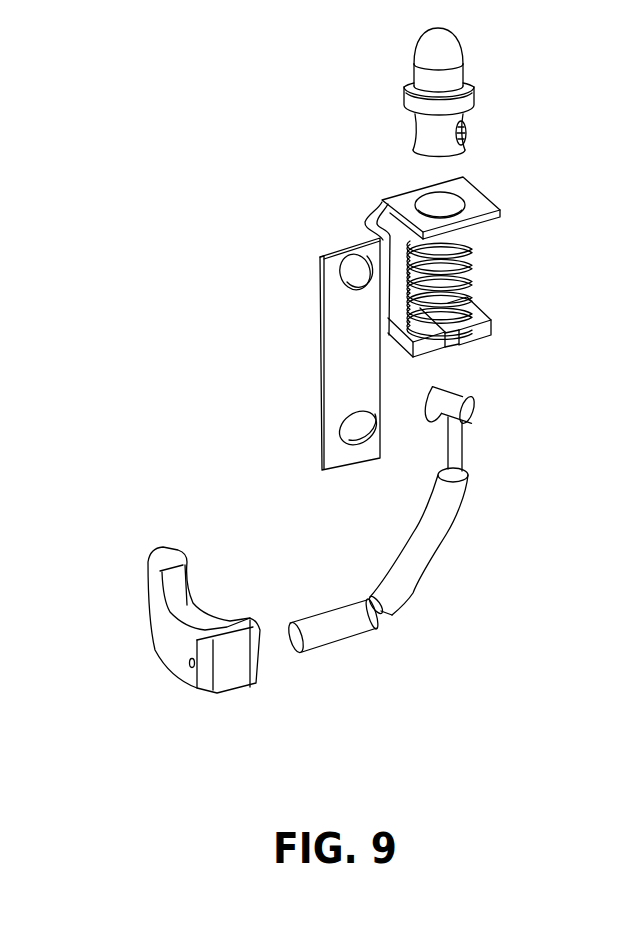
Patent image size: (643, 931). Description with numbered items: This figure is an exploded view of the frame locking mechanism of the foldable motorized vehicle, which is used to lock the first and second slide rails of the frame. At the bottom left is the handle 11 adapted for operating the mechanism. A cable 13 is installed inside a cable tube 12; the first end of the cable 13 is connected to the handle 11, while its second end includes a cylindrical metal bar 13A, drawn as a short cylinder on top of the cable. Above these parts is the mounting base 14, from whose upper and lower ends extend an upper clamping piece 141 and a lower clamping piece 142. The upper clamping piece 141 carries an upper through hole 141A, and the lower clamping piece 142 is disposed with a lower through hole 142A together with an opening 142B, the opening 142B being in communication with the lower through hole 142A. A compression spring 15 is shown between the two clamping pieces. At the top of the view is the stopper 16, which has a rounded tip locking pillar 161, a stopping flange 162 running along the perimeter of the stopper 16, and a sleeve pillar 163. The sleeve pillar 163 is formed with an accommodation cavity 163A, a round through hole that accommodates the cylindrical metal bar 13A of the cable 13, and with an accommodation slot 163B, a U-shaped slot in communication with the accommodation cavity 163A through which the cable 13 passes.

The handle 11 is at (172, 652).
The cable tube 12 is at (435, 532).
The cable 13 is at (452, 450).
The cylindrical metal bar 13A is at (467, 412).
The mounting base 14 is at (214, 185).
The upper clamping piece 141 is at (407, 205).
The upper through hole 141A is at (445, 212).
The lower clamping piece 142 is at (408, 332).
The lower through hole 142A is at (472, 317).
The opening 142B is at (452, 343).
The compression spring 15 is at (473, 270).
The stopper 16 is at (307, 22).
The rounded tip locking pillar 161 is at (433, 50).
The stopping flange 162 is at (412, 100).
The sleeve pillar 163 is at (428, 138).
The accommodation cavity 163A is at (465, 123).
The accommodation slot 163B is at (462, 142).